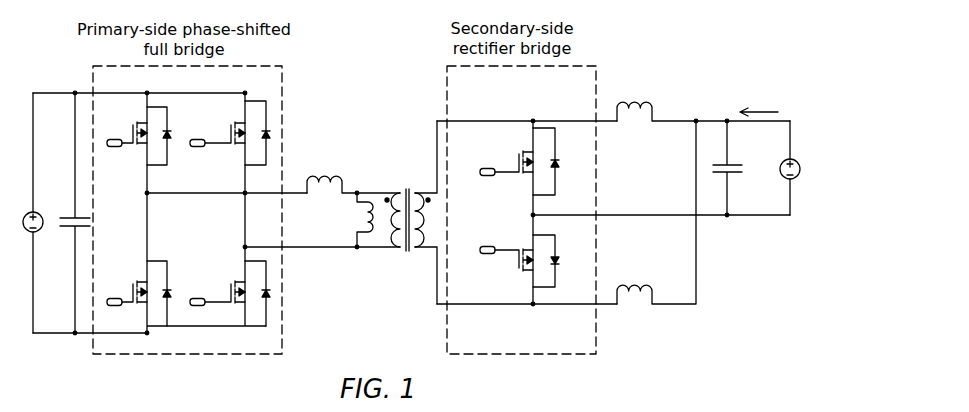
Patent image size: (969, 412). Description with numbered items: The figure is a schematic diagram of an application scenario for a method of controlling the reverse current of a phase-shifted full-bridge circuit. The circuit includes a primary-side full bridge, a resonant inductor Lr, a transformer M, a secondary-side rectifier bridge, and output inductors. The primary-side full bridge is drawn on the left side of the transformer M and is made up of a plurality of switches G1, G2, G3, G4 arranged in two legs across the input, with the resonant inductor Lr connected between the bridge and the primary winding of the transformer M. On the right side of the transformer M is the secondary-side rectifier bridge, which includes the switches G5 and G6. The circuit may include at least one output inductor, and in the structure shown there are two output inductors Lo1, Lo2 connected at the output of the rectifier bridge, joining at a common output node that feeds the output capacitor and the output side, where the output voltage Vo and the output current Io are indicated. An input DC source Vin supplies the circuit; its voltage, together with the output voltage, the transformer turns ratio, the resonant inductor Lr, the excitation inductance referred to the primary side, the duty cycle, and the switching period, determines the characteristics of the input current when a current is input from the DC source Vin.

The DC source Vin is at (22, 213).
The switch G1 is at (139, 136).
The switch G2 is at (139, 293).
The switch G3 is at (230, 133).
The switch G4 is at (230, 293).
The resonant inductor Lr is at (353, 179).
The transformer M is at (411, 212).
The switch G5 is at (519, 161).
The switch G6 is at (519, 261).
The output inductor Lo1 is at (703, 107).
The output inductor Lo2 is at (656, 212).
The output voltage source / load Vo is at (799, 168).
The output current Io is at (759, 106).